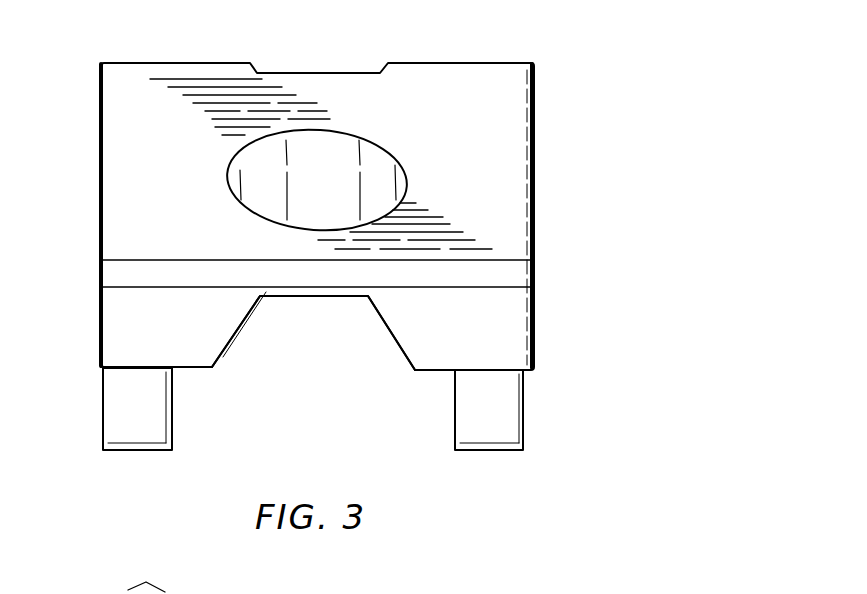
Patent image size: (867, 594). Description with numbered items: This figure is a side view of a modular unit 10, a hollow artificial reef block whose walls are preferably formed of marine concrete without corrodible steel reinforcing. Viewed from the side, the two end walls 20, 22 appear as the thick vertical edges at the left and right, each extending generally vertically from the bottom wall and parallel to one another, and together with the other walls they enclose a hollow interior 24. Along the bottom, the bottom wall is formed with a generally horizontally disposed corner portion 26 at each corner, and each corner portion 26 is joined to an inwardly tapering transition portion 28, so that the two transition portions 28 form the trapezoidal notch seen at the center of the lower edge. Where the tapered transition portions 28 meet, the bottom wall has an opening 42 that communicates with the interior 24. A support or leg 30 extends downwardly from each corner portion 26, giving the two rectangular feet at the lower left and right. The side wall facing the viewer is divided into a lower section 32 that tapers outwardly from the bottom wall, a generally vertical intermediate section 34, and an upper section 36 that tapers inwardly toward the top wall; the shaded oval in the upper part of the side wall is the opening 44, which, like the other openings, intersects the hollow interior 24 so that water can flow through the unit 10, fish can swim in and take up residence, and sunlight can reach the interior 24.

The modular unit 10 is at (622, 102).
The end wall 20 is at (100, 90).
The end wall 22 is at (538, 93).
The hollow interior 24 is at (342, 190).
The corner portion 26 is at (195, 370).
The transition portion 28 is at (392, 343).
The leg 30 is at (103, 432).
The lower section 32 is at (98, 335).
The intermediate section 34 is at (100, 273).
The upper section 36 is at (110, 166).
The opening 42 is at (302, 298).
The opening 44 is at (325, 133).